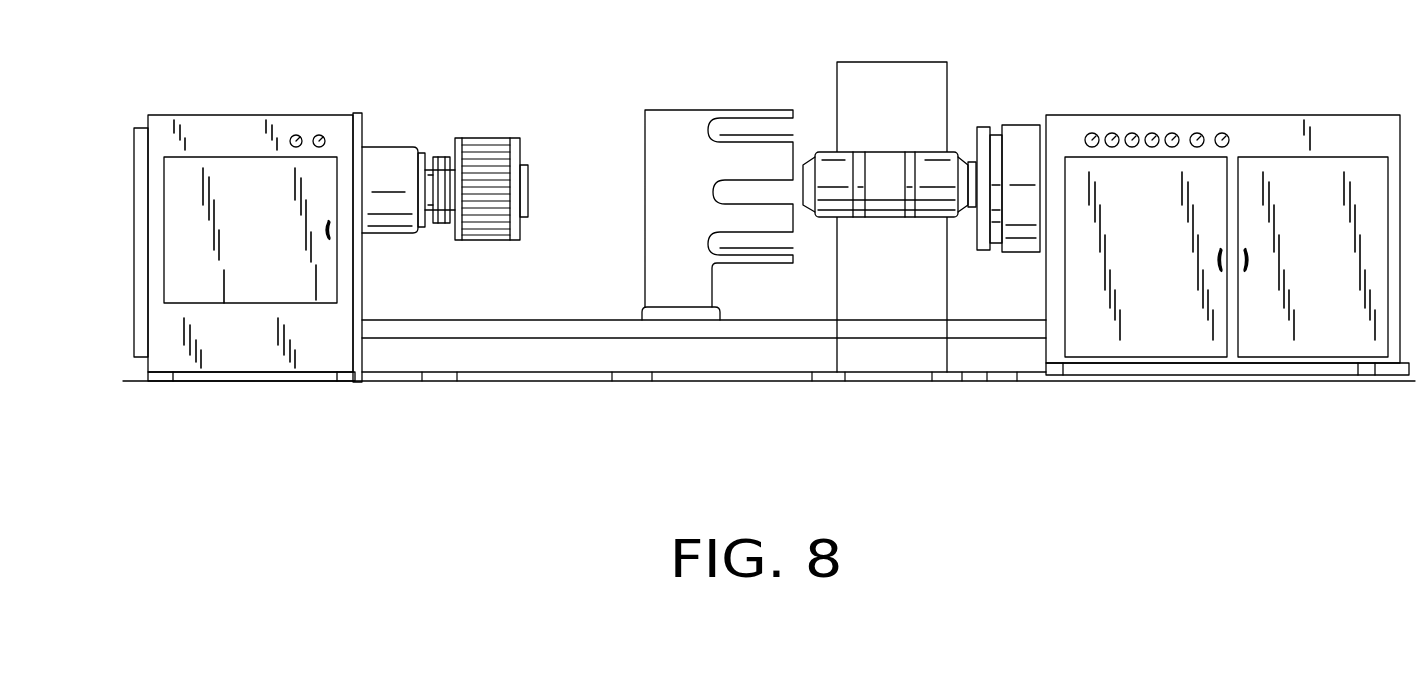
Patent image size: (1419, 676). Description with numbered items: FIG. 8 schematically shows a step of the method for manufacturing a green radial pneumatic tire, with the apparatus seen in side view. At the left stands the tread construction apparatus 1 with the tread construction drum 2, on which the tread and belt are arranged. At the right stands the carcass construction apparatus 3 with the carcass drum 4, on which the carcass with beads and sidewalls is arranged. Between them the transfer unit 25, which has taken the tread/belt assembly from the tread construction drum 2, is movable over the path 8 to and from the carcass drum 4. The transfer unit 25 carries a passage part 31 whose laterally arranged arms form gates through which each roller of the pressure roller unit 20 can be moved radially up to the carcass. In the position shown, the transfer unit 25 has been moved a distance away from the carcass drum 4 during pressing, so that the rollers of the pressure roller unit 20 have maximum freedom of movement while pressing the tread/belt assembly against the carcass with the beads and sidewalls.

The tread construction apparatus 1 is at (236, 135).
The tread construction drum 2 is at (485, 139).
The carcass construction apparatus 3 is at (1242, 106).
The carcass drum 4 is at (899, 145).
The path 8 is at (551, 325).
The pressure roller unit 20 is at (874, 94).
The transfer unit 25 is at (669, 108).
The passage part 31 is at (707, 103).